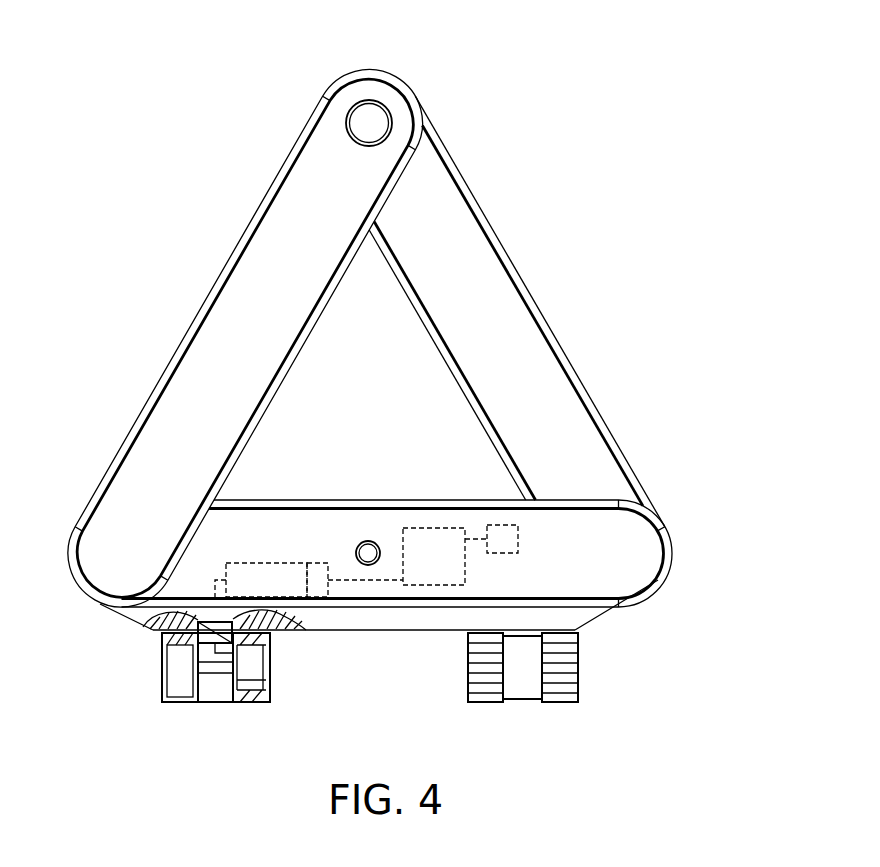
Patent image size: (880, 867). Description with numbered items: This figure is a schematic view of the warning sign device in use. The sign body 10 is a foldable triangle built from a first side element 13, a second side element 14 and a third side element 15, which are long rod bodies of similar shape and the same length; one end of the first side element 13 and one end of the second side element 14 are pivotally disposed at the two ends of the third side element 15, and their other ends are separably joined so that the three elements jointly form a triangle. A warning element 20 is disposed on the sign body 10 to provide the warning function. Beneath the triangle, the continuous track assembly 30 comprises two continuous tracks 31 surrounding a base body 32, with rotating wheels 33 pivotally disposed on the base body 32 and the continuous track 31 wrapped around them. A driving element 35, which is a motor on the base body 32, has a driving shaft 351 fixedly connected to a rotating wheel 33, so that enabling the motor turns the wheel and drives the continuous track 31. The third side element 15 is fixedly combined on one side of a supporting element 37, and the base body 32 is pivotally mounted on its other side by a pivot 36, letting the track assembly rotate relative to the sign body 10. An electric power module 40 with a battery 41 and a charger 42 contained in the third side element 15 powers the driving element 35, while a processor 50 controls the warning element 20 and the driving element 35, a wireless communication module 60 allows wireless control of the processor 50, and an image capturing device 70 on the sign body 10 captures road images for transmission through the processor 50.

The sign body 10 is at (285, 148).
The first side element 13 is at (547, 316).
The second side element 14 is at (243, 242).
The third side element 15 is at (668, 572).
The warning element 20 is at (165, 416).
The image capturing device 70 is at (363, 541).
The wireless communication module 60 is at (493, 521).
The processor 50 is at (452, 592).
The electric power module 40 is at (405, 681).
The battery 41 is at (270, 588).
The charger 42 is at (315, 590).
The supporting element 37 is at (150, 611).
The pivot 36 is at (185, 638).
The rotating wheel 33 is at (177, 668).
The driving shaft 351 is at (208, 668).
The driving element 35 is at (253, 668).
The continuous track assembly 30 is at (583, 652).
The continuous track 31 is at (483, 688).
The base body 32 is at (533, 690).